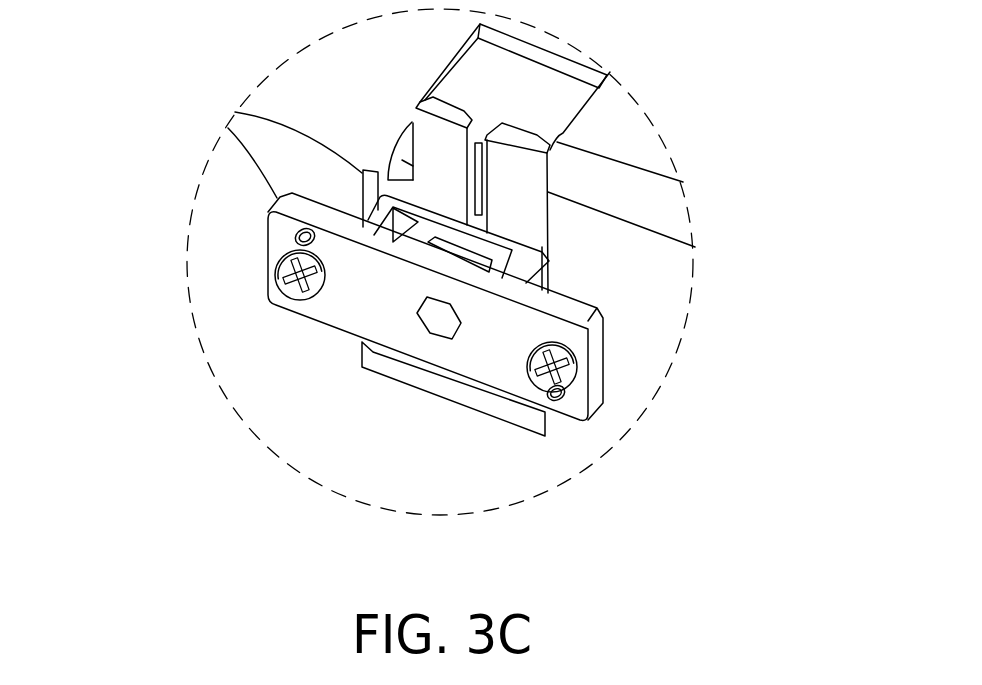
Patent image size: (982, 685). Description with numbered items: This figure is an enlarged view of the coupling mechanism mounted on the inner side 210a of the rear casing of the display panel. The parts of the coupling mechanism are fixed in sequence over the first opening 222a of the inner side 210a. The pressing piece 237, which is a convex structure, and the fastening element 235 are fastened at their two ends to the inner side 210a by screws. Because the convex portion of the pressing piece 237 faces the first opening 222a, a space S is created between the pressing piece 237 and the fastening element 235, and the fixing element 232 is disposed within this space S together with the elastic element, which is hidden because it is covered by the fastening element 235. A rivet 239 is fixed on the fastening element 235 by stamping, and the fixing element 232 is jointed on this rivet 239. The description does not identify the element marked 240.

The space S is at (235, 112).
The inner side 210a is at (648, 152).
The top plate 240 is at (553, 143).
The fixing element 232 is at (540, 237).
The pressing piece 237 is at (590, 302).
The fastening element 235 is at (575, 332).
The rivet 239 is at (437, 323).
The first opening 222a is at (435, 382).